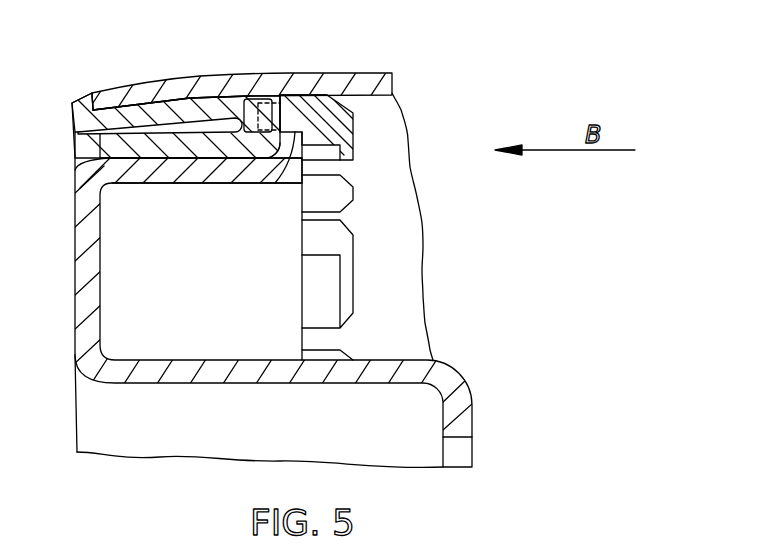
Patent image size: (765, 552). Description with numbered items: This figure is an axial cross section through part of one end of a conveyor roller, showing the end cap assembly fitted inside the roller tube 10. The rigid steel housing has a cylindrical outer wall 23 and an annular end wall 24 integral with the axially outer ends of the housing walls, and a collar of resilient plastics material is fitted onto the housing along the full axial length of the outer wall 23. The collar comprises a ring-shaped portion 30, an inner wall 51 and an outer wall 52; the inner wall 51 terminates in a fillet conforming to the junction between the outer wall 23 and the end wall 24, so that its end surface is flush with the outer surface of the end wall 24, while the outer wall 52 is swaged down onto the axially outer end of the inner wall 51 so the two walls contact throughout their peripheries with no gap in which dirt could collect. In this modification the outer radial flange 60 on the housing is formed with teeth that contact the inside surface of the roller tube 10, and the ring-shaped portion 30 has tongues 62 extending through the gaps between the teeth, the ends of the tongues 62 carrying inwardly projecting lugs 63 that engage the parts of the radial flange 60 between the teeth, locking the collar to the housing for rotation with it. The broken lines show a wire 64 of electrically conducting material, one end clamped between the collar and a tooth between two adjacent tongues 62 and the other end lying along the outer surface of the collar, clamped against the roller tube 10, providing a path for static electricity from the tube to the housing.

The roller tube 10 is at (290, 73).
The cylindrical outer wall 23 is at (207, 181).
The annular end wall 24 is at (100, 283).
The ring-shaped portion 30 is at (82, 100).
The inner wall 51 is at (183, 158).
The outer wall 52 is at (154, 100).
The outer radial flange 60 is at (284, 160).
The tongues 62 is at (330, 73).
The lugs 63 is at (340, 128).
The wire 64 is at (252, 99).